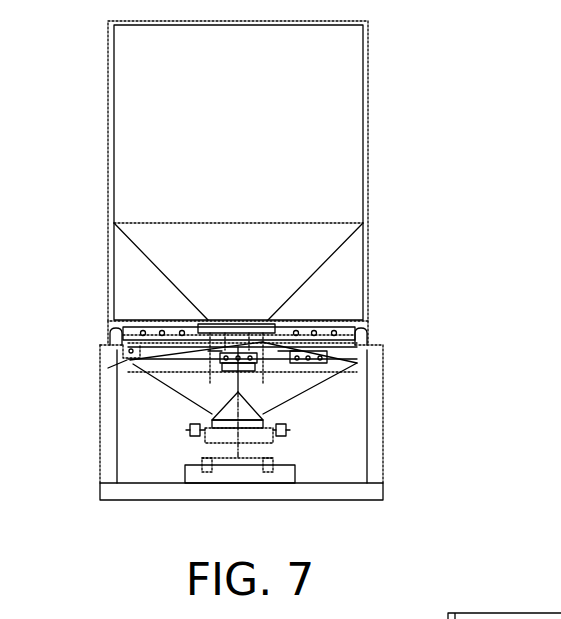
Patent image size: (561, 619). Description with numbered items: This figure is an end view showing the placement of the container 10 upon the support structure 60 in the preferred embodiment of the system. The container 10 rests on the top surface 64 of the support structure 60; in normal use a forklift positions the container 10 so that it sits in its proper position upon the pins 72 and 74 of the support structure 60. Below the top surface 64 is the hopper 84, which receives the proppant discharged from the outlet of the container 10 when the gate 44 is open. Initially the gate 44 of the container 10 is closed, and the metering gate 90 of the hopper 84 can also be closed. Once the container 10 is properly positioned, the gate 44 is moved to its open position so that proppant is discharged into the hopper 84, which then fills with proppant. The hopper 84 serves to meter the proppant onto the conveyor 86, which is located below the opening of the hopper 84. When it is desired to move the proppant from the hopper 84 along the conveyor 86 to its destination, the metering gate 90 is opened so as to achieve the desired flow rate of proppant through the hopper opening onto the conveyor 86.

The container 10 is at (392, 104).
The gate 44 is at (237, 323).
The pin 72 is at (113, 338).
The pin 74 is at (367, 328).
The top surface 64 is at (372, 343).
The support structure 60 is at (394, 422).
The hopper 84 is at (290, 388).
The metering gate 90 is at (227, 413).
The conveyor 86 is at (277, 433).